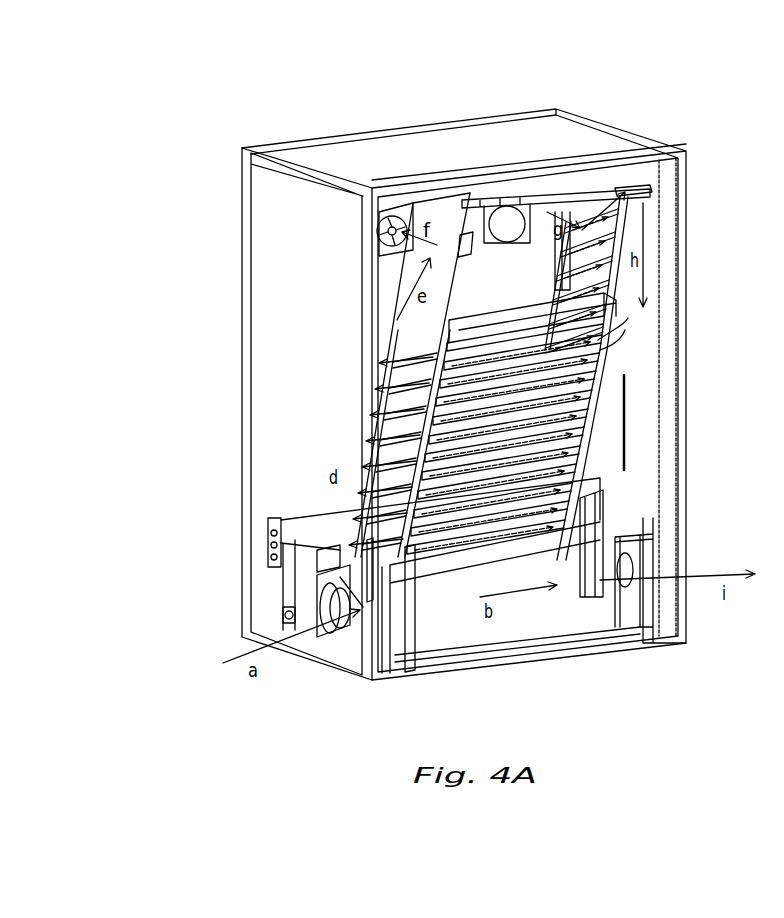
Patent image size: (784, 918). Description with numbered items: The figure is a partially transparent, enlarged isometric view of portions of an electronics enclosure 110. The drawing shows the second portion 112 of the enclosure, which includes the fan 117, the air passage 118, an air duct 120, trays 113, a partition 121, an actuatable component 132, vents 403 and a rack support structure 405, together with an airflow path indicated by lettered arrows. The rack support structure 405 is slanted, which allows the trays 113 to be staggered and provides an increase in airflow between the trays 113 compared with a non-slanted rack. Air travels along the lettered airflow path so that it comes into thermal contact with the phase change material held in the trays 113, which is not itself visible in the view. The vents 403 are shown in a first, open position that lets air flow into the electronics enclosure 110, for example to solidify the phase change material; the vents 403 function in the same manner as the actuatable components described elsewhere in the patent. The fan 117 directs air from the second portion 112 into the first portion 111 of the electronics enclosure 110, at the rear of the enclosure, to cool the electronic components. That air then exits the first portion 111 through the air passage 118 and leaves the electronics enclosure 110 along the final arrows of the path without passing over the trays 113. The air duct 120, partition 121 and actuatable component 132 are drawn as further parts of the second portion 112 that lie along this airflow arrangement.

The electronics enclosure 110 is at (597, 91).
The first portion 111 is at (267, 373).
The second portion 112 is at (467, 563).
The trays 113 is at (560, 341).
The fan 117 is at (391, 212).
The air passage 118 is at (512, 210).
The air duct 120 is at (443, 630).
The partition 121 is at (510, 272).
The actuatable component 132 is at (580, 530).
The vents 403 is at (318, 585).
The rack support structure 405 is at (623, 238).